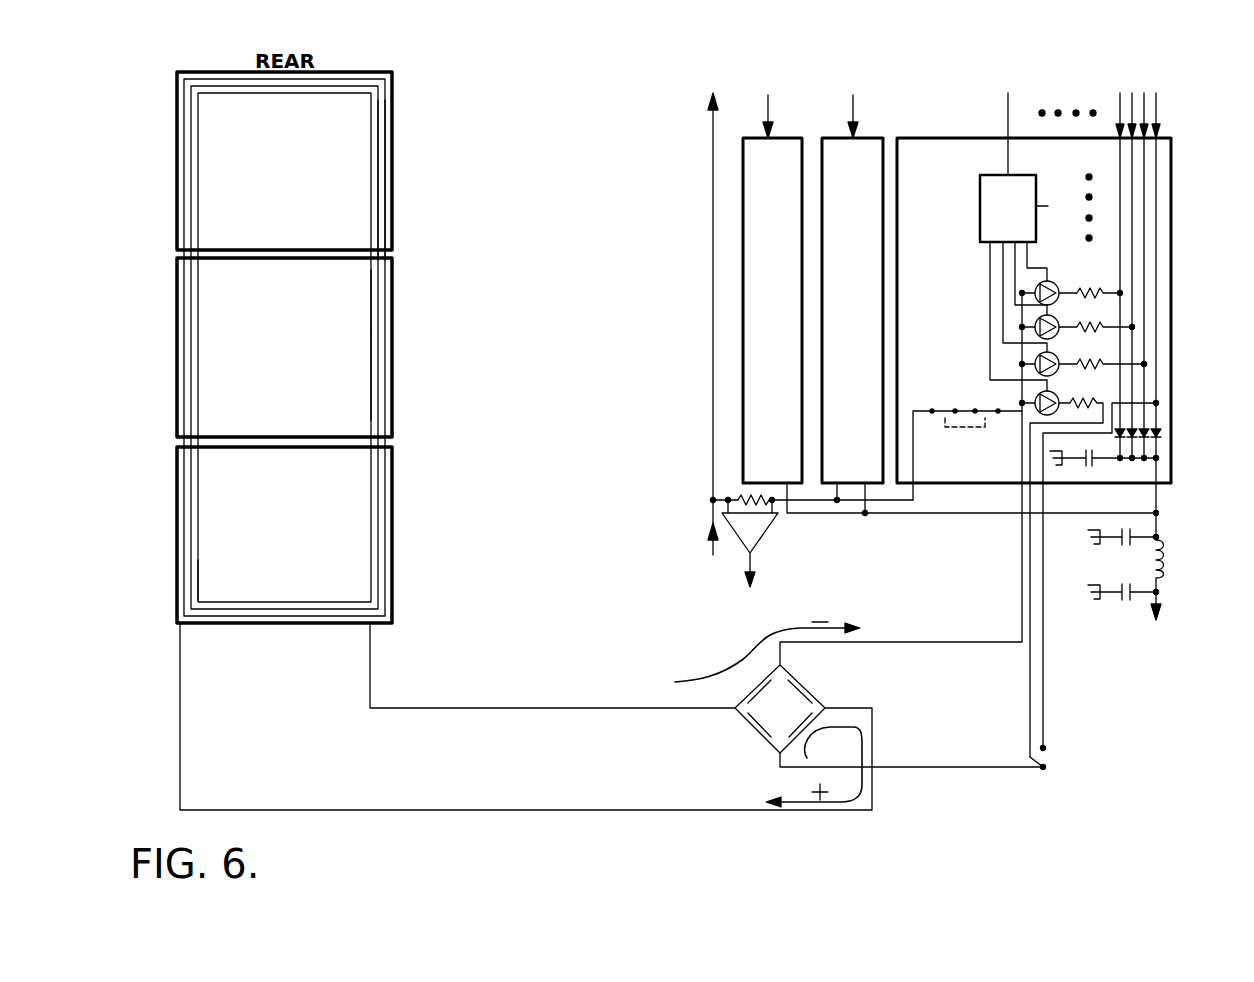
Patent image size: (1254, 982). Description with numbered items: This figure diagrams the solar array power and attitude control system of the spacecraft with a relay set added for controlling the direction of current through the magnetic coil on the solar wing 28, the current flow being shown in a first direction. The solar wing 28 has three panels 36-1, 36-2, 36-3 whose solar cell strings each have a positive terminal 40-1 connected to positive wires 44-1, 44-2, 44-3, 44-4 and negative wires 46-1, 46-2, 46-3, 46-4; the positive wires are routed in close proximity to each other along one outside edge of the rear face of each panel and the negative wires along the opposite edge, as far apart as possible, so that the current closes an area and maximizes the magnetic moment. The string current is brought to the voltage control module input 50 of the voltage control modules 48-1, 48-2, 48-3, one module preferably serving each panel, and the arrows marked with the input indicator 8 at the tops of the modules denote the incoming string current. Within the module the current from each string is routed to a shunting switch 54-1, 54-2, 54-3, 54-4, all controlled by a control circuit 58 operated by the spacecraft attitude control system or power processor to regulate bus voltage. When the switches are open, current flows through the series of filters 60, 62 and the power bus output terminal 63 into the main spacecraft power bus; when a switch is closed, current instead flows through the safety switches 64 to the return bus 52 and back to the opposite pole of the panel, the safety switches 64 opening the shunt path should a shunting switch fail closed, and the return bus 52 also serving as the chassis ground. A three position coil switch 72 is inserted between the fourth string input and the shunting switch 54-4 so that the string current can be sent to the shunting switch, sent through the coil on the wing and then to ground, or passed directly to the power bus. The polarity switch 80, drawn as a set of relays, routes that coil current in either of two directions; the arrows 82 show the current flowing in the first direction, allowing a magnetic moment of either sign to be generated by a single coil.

The solar wing 28 is at (488, 98).
The positive terminal 40-1 is at (175, 82).
The first panel 36-1 is at (393, 155).
The second panel 36-2 is at (393, 410).
The third panel 36-3 is at (393, 528).
The positive wire 44-1 is at (386, 270).
The positive wire 44-2 is at (379, 305).
The positive wire 44-3 is at (375, 292).
The positive wire 44-4 is at (370, 338).
The negative wire 46-1 is at (185, 390).
The negative wire 46-2 is at (191, 465).
The negative wire 46-3 is at (196, 514).
The negative wire 46-4 is at (199, 543).
The input signal 8 is at (817, 116).
The voltage control module 48-1 is at (966, 136).
The voltage control module 48-2 is at (818, 152).
The voltage control module 48-3 is at (743, 152).
The voltage control module input 50 is at (1168, 112).
The return bus 52 is at (713, 165).
The shunting switch 54-1 is at (1035, 290).
The shunting switch 54-2 is at (1035, 325).
The shunting switch 54-3 is at (1035, 362).
The shunting switch 54-4 is at (1035, 402).
The control circuit 58 is at (980, 190).
The filter 60 is at (1172, 462).
The filter 62 is at (1170, 570).
The power bus output terminal 63 is at (1156, 605).
The safety switches 64 is at (965, 424).
The coil switch 72 is at (1043, 769).
The polarity switch 80 is at (752, 745).
The arrows 82 is at (770, 634).